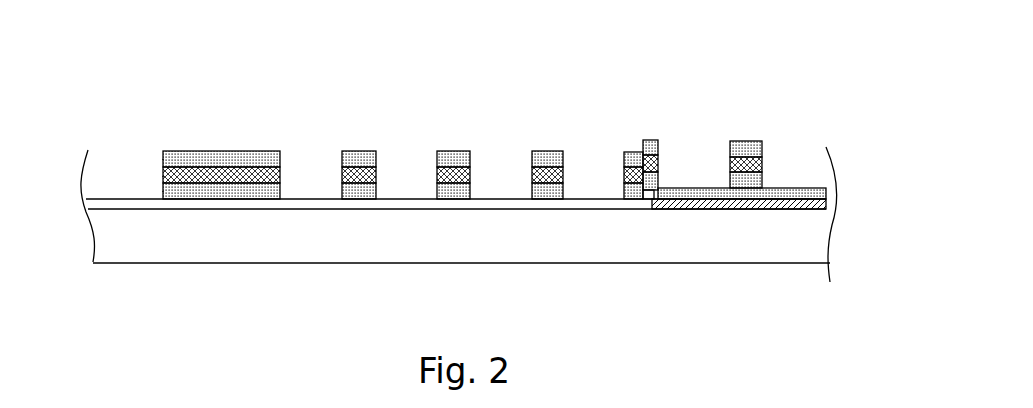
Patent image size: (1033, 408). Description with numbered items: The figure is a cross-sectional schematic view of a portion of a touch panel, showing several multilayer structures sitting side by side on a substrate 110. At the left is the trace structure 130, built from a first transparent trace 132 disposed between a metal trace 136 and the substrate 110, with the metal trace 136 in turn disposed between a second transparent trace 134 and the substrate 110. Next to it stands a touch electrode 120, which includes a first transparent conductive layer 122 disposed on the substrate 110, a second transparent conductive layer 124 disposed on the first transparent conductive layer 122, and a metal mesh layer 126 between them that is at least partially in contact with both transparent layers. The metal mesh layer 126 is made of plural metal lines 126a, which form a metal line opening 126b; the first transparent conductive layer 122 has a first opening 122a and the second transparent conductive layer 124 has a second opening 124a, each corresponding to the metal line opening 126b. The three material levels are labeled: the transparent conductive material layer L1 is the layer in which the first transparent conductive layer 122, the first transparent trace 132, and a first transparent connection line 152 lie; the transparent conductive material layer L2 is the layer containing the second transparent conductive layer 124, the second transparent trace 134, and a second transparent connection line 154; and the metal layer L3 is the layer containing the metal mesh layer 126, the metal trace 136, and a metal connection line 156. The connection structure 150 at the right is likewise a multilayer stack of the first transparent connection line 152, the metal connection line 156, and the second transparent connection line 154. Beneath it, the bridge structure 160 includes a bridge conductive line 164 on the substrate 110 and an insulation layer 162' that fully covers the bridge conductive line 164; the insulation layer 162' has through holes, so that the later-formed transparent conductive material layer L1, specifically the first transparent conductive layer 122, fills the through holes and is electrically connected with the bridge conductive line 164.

The substrate 110 is at (97, 228).
The touch electrode 120 is at (357, 112).
The first transparent conductive layer 122 is at (331, 133).
The second transparent conductive layer 124 is at (377, 160).
The metal mesh layer 126 is at (360, 165).
The first opening 122a is at (540, 190).
The second opening 124a is at (540, 154).
The metal line 126a is at (452, 152).
The metal line opening 126b is at (540, 172).
The trace structure 130 is at (189, 112).
The first transparent trace 132 is at (265, 71).
The second transparent trace 134 is at (277, 157).
The metal trace 136 is at (240, 178).
The connection structure 150 is at (744, 99).
The first transparent connection line 152 is at (717, 122).
The second transparent connection line 154 is at (762, 147).
The metal connection line 156 is at (748, 160).
The bridge structure 160 is at (719, 270).
The insulation layer 162' is at (742, 245).
The bridge conductive line 164 is at (757, 210).
The transparent conductive material layer L1 is at (160, 192).
The transparent conductive material layer L2 is at (160, 161).
The metal layer L3 is at (160, 177).